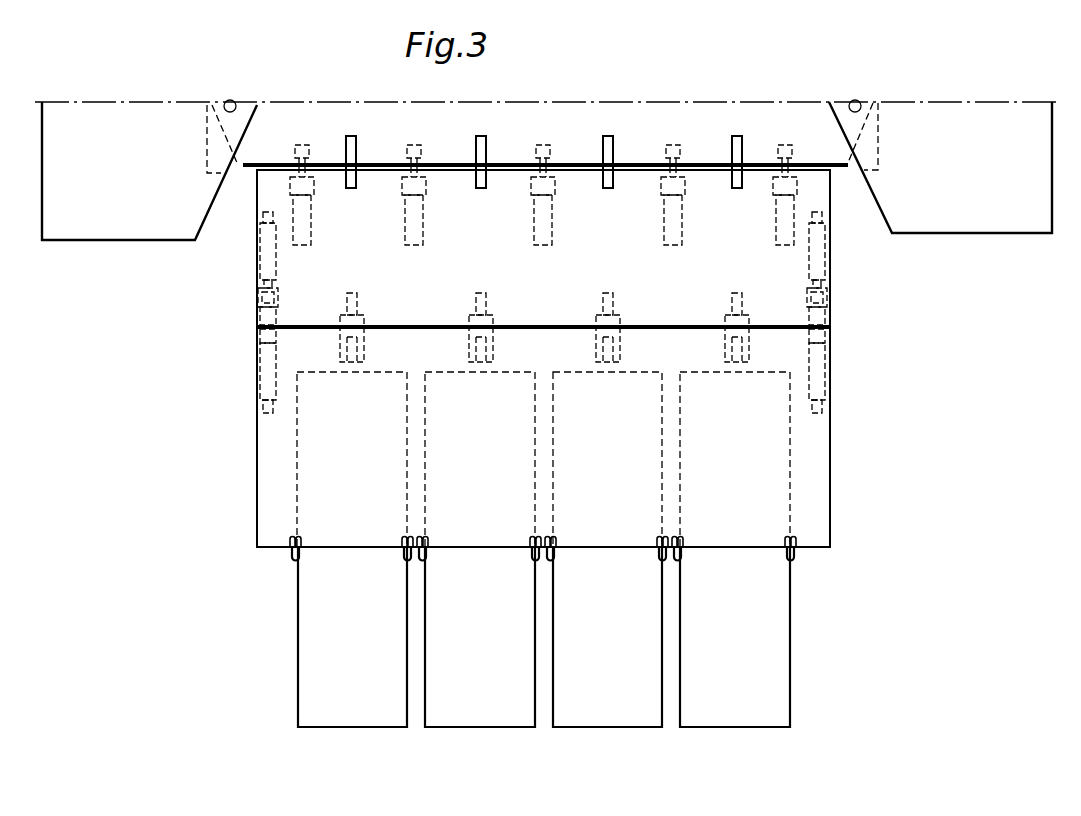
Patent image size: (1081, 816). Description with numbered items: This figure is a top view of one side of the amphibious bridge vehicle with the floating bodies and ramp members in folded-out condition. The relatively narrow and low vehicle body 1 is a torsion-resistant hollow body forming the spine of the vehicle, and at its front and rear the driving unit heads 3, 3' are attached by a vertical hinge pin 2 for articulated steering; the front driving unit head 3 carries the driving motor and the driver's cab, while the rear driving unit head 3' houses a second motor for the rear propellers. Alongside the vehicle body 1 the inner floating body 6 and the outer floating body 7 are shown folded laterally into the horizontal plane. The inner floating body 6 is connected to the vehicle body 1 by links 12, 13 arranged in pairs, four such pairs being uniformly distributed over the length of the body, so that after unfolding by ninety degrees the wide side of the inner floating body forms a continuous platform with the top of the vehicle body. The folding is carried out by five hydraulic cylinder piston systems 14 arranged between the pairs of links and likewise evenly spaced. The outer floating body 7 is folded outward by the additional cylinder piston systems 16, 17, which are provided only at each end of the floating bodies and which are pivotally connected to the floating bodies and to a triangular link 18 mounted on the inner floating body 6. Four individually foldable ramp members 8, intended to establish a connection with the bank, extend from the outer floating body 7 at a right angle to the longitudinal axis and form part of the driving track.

The vehicle body 1 is at (703, 107).
The vertical hinge pin 2 is at (230, 100).
The front driving unit head 3 is at (149, 149).
The rear driving unit head 3' is at (940, 145).
The inner floating body 6 is at (802, 272).
The outer floating body 7 is at (820, 480).
The ramp member 8 is at (782, 647).
The link 12 is at (544, 151).
The link 13 is at (373, 132).
The hydraulic cylinder piston system 14 is at (533, 217).
The hydraulic cylinder piston system 16 is at (272, 264).
The hydraulic cylinder piston system 17 is at (270, 392).
The triangular link 18 is at (280, 312).